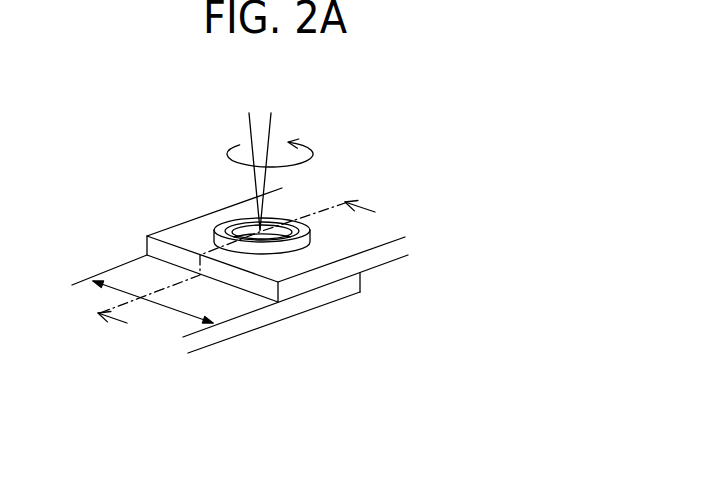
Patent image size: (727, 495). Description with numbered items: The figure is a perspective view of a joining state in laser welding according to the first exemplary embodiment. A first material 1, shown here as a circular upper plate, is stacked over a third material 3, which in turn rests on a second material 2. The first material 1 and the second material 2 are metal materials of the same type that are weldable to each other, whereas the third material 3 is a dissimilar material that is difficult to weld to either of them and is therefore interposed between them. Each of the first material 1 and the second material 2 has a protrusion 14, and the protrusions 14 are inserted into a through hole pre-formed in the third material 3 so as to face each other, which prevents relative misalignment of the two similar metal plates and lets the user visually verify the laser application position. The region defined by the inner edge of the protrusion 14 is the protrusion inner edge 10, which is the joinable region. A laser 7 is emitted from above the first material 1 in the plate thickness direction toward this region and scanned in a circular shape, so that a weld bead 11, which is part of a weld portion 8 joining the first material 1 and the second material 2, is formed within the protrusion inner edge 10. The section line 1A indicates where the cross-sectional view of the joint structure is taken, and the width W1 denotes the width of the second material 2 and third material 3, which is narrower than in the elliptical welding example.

The first material 1 is at (255, 249).
The second material 2 is at (337, 299).
The third material 3 is at (398, 258).
The laser 7 is at (271, 123).
The weld portion 8 is at (222, 227).
The protrusion inner edge 10 is at (237, 230).
The weld bead 11 is at (207, 200).
The protrusion 14 is at (319, 191).
The line 1A- 1A is at (256, 275).
The width W1 is at (158, 302).